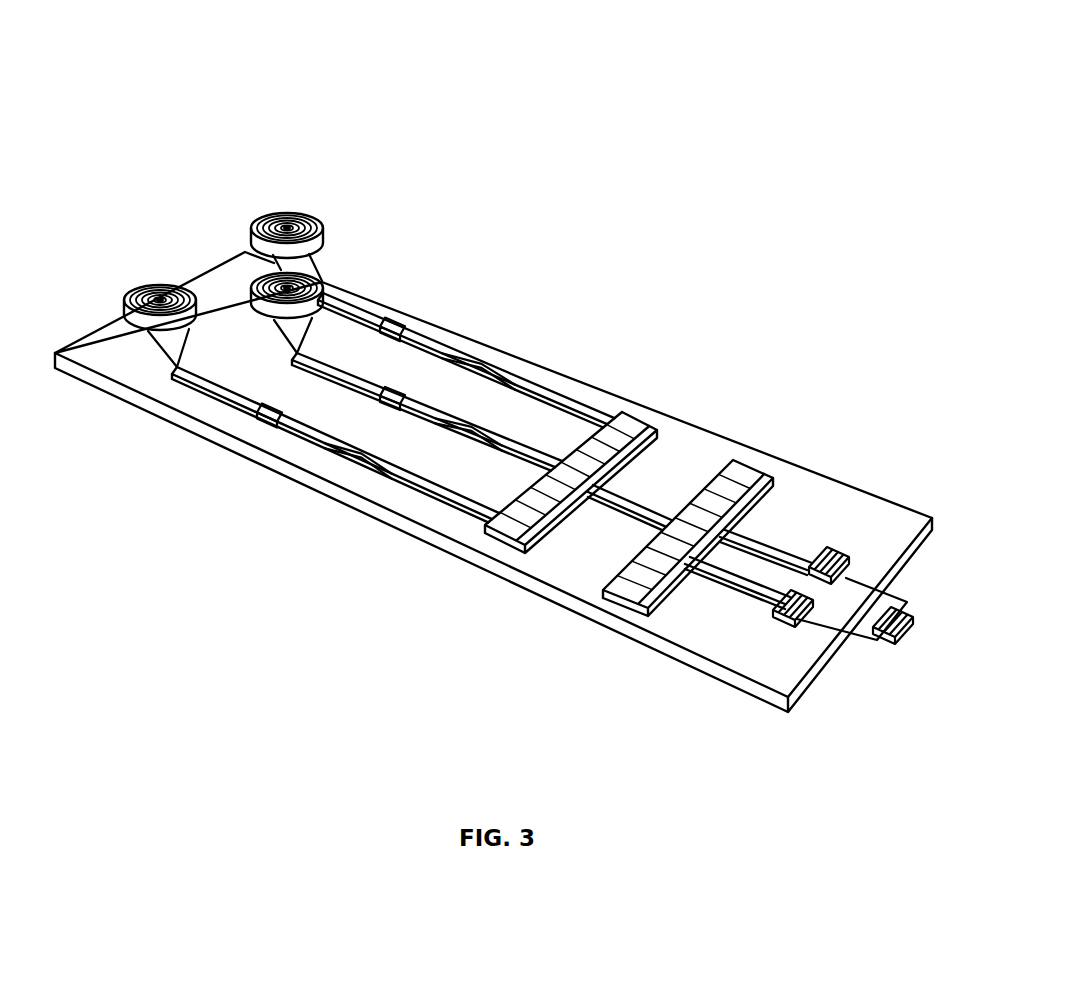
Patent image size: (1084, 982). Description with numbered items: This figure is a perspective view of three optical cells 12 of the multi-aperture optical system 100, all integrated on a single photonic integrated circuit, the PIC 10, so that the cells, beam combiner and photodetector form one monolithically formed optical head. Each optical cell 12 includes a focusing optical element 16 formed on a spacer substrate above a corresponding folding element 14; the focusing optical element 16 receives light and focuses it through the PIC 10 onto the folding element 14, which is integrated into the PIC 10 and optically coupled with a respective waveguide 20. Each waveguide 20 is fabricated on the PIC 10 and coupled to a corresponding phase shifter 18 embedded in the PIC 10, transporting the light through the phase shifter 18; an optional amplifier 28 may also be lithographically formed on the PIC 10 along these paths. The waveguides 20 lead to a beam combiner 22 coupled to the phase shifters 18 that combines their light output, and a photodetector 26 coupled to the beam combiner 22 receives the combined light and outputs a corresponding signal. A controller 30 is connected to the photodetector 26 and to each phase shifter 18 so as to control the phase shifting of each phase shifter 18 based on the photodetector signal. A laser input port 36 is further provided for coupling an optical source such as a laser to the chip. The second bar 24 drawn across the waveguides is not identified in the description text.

The multi-aperture optical system 100 is at (428, 104).
The PIC 10 is at (222, 442).
The optical cell 12 is at (237, 237).
The folding element 14 is at (172, 372).
The focusing optical element 16 is at (150, 288).
The phase shifter 18 is at (403, 325).
The waveguide 20 is at (365, 326).
The beam combiner 22 is at (502, 542).
The second bar 24 is at (630, 604).
The photodetector 26 is at (790, 625).
The amplifier 28 is at (490, 364).
The controller 30 is at (903, 632).
The laser input port 36 is at (832, 556).